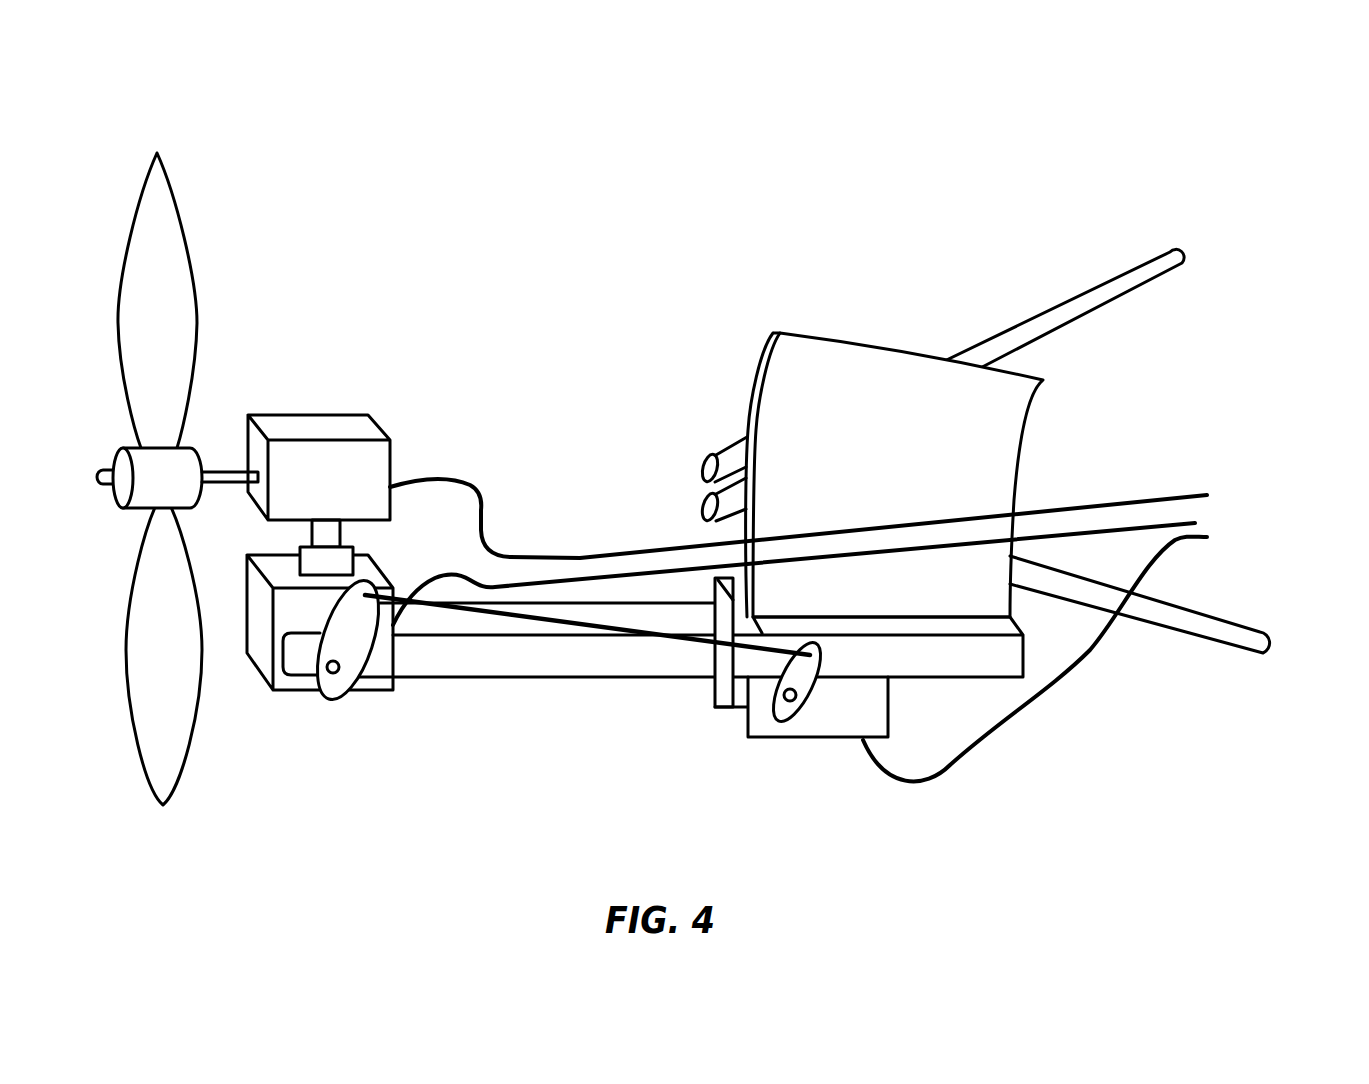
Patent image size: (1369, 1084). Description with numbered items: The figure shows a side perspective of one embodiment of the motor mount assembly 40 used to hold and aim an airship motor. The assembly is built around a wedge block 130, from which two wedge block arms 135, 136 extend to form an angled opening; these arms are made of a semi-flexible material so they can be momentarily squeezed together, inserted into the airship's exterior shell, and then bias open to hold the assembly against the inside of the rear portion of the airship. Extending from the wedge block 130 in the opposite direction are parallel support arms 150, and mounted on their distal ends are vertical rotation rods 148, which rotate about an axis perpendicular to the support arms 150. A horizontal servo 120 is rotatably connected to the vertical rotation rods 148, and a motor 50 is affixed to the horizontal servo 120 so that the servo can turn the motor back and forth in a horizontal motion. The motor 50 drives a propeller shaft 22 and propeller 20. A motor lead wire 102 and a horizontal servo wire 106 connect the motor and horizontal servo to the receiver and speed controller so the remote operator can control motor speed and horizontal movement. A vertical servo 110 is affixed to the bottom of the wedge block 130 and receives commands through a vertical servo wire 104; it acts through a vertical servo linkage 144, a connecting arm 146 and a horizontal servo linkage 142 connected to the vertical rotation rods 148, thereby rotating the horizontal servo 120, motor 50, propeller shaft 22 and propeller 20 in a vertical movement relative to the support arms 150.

The propeller 20 is at (110, 235).
The propeller shaft 22 is at (222, 467).
The motor mount assembly 40 is at (710, 168).
The motor 50 is at (328, 428).
The motor lead wire 102 is at (487, 476).
The vertical servo wire 104 is at (1067, 680).
The horizontal servo wire 106 is at (580, 575).
The vertical servo 110 is at (730, 690).
The horizontal servo 120 is at (265, 640).
The wedge block 130 is at (813, 378).
The wedge block arm 135 is at (1122, 283).
The wedge block arm 136 is at (1233, 635).
The horizontal servo linkage 142 is at (370, 630).
The vertical servo linkage 144 is at (806, 698).
The connecting arm 146 is at (610, 633).
The vertical rotation rods 148 is at (337, 683).
The support arms 150 is at (490, 627).